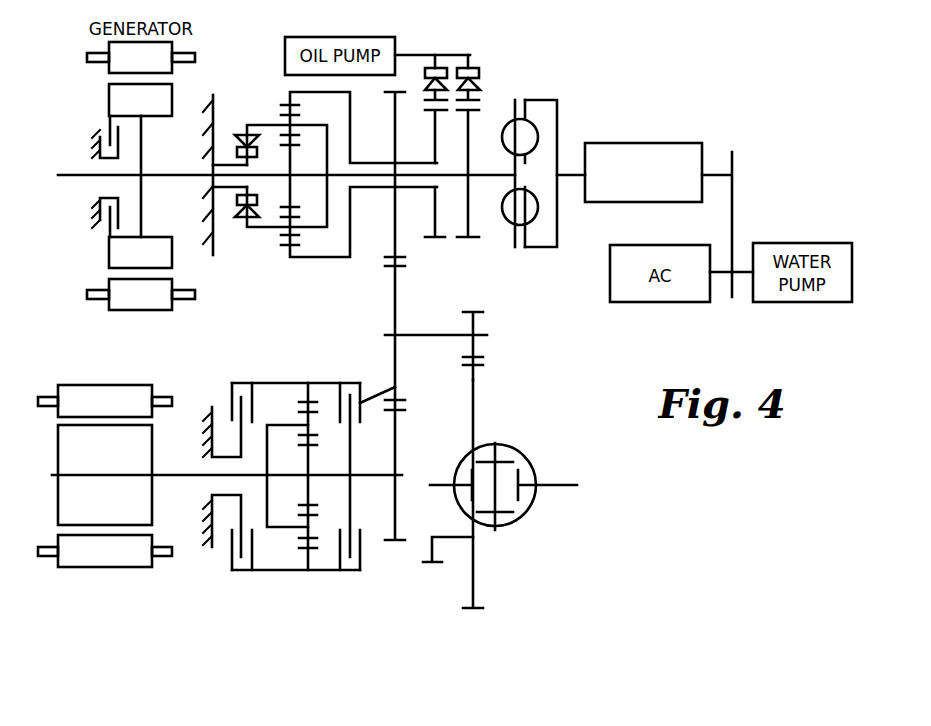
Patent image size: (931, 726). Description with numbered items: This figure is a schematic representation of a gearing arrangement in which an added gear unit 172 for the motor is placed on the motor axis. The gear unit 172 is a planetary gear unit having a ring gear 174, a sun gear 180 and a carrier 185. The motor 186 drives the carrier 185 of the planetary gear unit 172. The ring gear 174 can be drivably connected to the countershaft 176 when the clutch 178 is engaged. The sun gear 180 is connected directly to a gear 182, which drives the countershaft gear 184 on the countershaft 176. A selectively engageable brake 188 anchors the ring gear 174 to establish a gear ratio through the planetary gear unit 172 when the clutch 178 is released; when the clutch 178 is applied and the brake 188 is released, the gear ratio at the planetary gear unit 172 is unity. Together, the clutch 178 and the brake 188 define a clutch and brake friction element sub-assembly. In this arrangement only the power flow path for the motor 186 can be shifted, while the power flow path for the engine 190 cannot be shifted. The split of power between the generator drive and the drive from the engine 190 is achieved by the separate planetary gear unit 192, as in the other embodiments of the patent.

The gear unit 172 is at (277, 582).
The ring gear 174 is at (306, 400).
The countershaft 176 is at (430, 335).
The clutch 178 is at (397, 386).
The sun gear 180 is at (312, 453).
The gear 182 is at (397, 432).
The countershaft gear 184 is at (397, 369).
The carrier 185 is at (280, 425).
The motor 186 is at (80, 440).
The brake 188 is at (233, 412).
The engine 190 is at (663, 143).
The planetary gear unit 192 is at (288, 88).